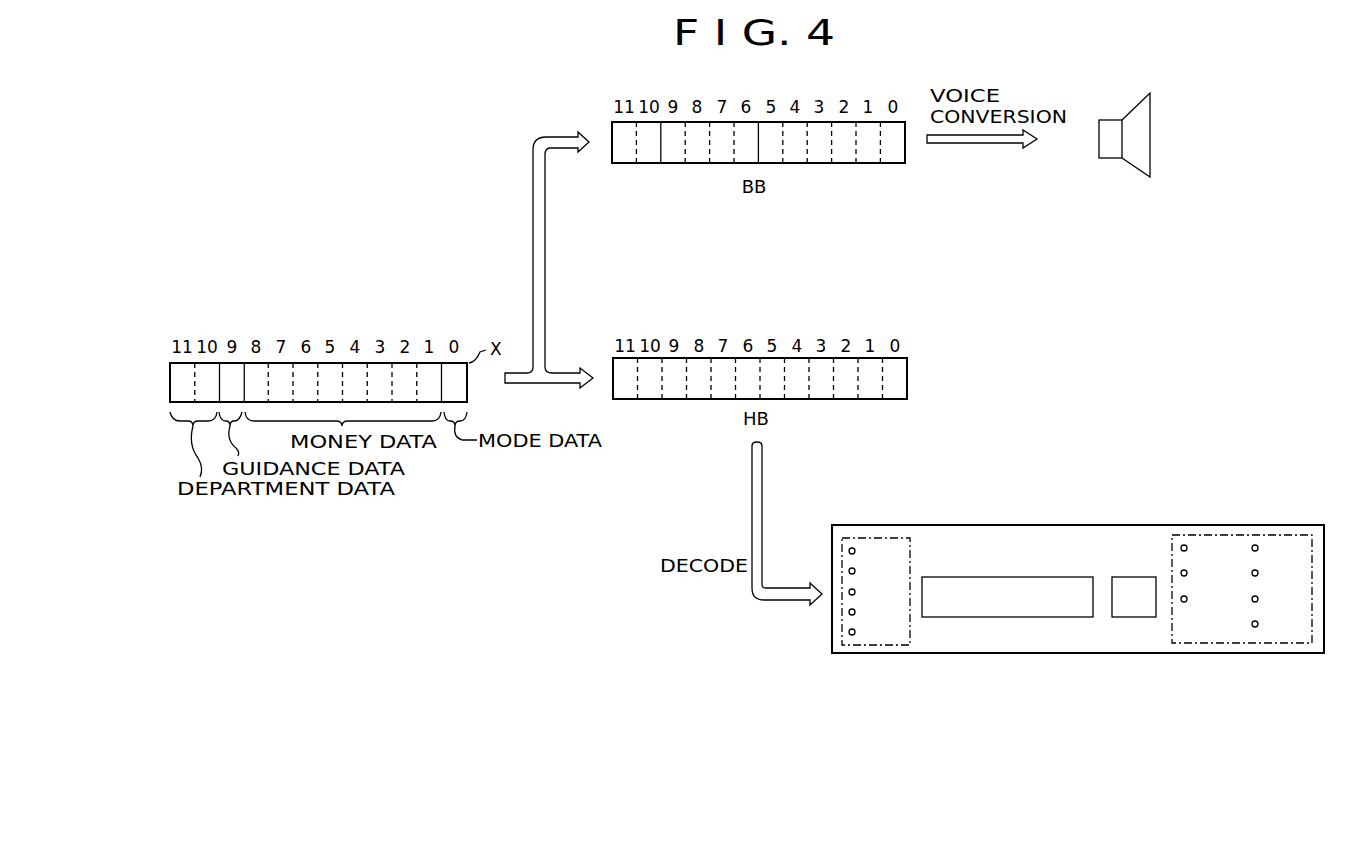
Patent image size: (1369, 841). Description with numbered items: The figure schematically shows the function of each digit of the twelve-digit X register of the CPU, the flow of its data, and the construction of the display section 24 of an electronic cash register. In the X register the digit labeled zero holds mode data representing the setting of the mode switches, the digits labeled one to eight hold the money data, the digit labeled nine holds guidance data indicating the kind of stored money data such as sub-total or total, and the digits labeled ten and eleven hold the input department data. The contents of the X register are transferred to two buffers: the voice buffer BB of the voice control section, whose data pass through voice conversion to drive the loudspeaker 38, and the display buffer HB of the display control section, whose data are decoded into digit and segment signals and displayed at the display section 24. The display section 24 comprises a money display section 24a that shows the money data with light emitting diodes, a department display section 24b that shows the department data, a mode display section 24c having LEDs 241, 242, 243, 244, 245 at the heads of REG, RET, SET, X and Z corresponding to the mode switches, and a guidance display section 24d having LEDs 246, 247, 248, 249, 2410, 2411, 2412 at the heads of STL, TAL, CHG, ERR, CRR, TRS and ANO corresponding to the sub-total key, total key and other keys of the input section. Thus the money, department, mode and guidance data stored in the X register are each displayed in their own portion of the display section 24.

The display section 24 is at (989, 525).
The money display section 24a is at (1003, 617).
The department display section 24b is at (1120, 617).
The mode display section 24c is at (895, 645).
The guidance display section 24d is at (1300, 645).
The LED 241 is at (852, 547).
The LED 242 is at (848, 571).
The LED 243 is at (848, 595).
The LED 244 is at (849, 615).
The LED 245 is at (852, 636).
The LED 246 is at (1183, 545).
The LED 247 is at (1181, 571).
The LED 248 is at (1184, 602).
The LED 249 is at (1257, 545).
The LED 2410 is at (1252, 572).
The LED 2411 is at (1253, 602).
The LED 2412 is at (1256, 628).
The loudspeaker 38 is at (1113, 120).